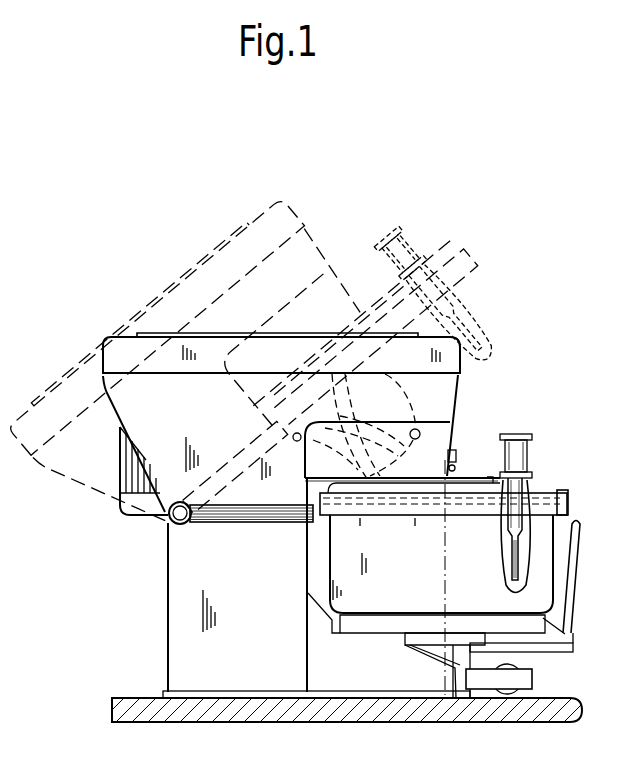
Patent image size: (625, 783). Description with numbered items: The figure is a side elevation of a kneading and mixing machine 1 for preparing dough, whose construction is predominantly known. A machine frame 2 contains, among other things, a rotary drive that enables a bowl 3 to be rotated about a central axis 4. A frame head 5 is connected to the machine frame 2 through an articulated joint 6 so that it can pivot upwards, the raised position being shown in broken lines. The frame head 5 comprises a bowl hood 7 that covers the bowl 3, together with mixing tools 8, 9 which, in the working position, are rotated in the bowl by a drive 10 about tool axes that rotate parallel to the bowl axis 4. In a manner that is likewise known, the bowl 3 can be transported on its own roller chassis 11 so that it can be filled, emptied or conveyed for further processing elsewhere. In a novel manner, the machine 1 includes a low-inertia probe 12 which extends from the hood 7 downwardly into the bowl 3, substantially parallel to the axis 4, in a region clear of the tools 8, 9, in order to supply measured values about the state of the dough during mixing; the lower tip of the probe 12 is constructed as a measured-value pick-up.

The kneading and mixing machine 1 is at (338, 212).
The machine frame 2 is at (252, 587).
The bowl 3 is at (462, 562).
The central axis 4 is at (446, 607).
The frame head 5 is at (192, 419).
The articulated joint 6 is at (170, 524).
The bowl hood 7 is at (570, 502).
The mixing tool 8 is at (418, 406).
The mixing tool 9 is at (392, 458).
The drive 10 is at (133, 500).
The roller chassis 11 is at (548, 680).
The probe 12 is at (542, 452).